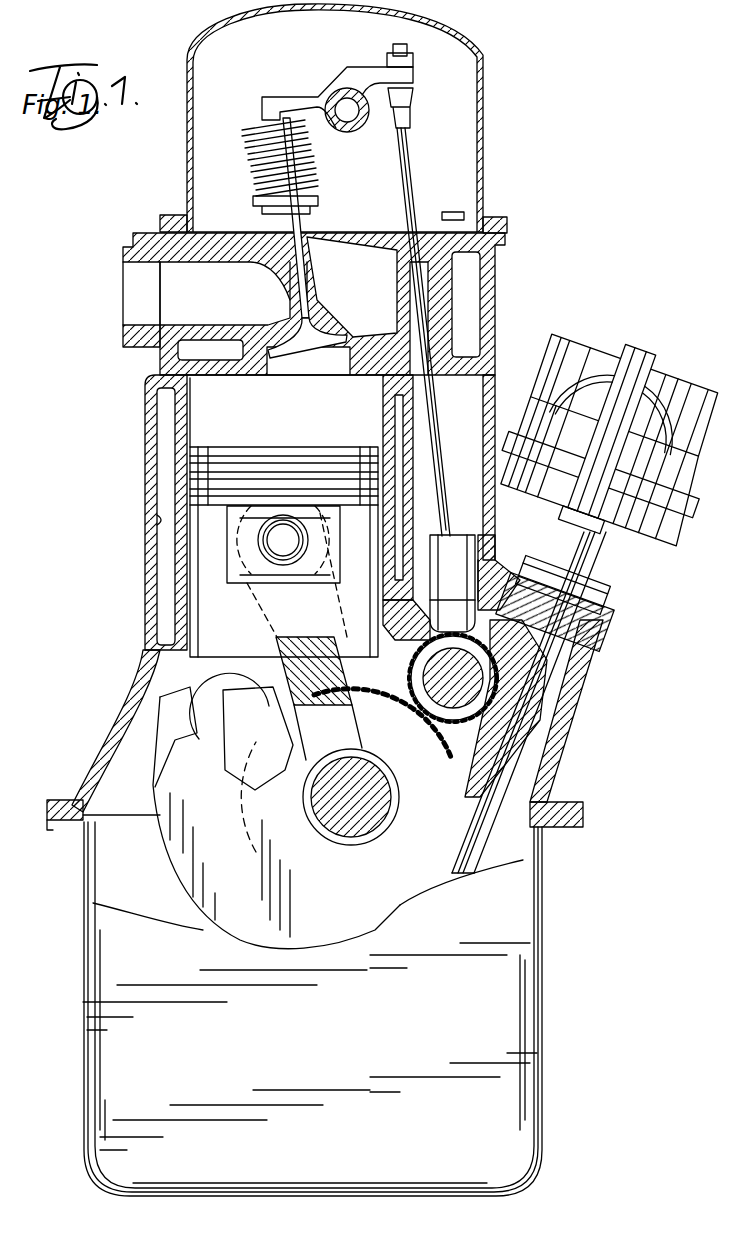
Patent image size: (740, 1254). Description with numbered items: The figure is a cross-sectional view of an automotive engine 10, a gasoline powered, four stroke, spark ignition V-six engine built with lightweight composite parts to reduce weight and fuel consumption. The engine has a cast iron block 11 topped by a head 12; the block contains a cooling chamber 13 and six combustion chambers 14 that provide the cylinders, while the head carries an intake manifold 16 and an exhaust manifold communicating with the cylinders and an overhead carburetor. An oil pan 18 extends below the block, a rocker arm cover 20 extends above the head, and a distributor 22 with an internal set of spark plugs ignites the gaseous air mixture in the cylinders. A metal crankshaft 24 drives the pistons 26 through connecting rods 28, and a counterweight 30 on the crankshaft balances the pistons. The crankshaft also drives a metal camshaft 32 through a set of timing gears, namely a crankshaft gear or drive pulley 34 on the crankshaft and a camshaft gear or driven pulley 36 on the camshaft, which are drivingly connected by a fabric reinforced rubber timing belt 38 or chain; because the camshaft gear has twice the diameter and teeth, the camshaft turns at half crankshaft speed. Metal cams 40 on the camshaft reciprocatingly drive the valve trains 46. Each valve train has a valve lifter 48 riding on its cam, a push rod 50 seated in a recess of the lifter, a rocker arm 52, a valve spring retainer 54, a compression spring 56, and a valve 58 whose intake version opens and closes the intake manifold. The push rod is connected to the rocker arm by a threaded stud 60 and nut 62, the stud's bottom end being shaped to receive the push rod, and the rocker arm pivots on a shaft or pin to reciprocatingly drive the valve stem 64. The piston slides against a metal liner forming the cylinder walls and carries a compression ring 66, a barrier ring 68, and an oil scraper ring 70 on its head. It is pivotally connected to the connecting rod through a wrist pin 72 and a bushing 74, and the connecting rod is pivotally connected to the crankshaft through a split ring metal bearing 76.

The automotive engine 10 is at (112, 647).
The block 11 is at (146, 443).
The head 12 is at (158, 232).
The cooling chamber 13 is at (158, 521).
The combustion chamber 14 is at (192, 406).
The intake manifold 16 is at (126, 289).
The oil pan 18 is at (88, 1113).
The rocker arm cover 20 is at (486, 86).
The distributor 22 is at (612, 345).
The crankshaft 24 is at (385, 912).
The piston 26 is at (222, 470).
The connecting rod 28 is at (290, 692).
The counterweight 30 is at (212, 922).
The camshaft 32 is at (512, 640).
The crankshaft gear 34 is at (291, 790).
The camshaft gear 36 is at (383, 724).
The timing belt 38 is at (430, 862).
The cam 40 is at (447, 706).
The valve train 46 is at (464, 532).
The valve lifter 48 is at (484, 565).
The push rod 50 is at (418, 160).
The rocker arm 52 is at (352, 70).
The valve spring retainer 54 is at (258, 131).
The compression spring 56 is at (250, 186).
The valve 58 is at (301, 341).
The threaded stud 60 is at (412, 101).
The nut 62 is at (413, 57).
The valve stem 64 is at (290, 297).
The compression ring 66 is at (352, 455).
The barrier ring 68 is at (300, 478).
The oil scraper ring 70 is at (248, 488).
The wrist pin 72 is at (308, 567).
The bushing 74 is at (272, 567).
The split ring metal bearing 76 is at (332, 874).